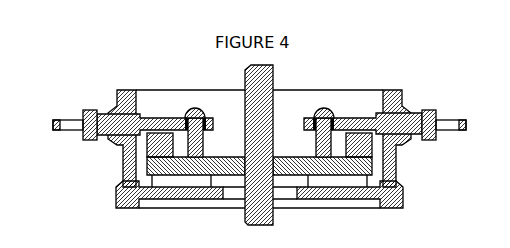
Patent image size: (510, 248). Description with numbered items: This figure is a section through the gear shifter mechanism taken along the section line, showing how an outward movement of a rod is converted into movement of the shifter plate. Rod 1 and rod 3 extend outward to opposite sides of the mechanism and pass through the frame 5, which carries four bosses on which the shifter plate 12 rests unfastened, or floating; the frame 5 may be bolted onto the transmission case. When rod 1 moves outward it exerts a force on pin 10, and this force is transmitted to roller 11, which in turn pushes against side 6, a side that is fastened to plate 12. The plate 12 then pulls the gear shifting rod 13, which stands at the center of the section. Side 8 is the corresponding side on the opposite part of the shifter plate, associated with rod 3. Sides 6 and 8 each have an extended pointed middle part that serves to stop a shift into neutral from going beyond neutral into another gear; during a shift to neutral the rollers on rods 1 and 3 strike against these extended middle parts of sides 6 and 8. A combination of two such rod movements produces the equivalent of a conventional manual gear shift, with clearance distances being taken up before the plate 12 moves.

The rod 1 is at (157, 117).
The rod 3 is at (356, 118).
The frame 5 is at (404, 190).
The side 6 is at (147, 153).
The side 8 is at (373, 151).
The pin 10 is at (206, 112).
The roller 11 is at (204, 148).
The plate 12 is at (147, 167).
The gear shifting rod 13 is at (274, 77).